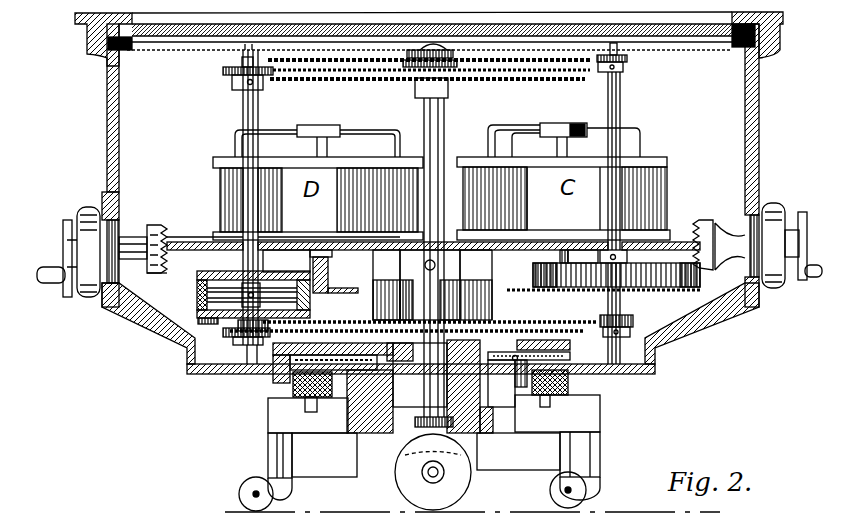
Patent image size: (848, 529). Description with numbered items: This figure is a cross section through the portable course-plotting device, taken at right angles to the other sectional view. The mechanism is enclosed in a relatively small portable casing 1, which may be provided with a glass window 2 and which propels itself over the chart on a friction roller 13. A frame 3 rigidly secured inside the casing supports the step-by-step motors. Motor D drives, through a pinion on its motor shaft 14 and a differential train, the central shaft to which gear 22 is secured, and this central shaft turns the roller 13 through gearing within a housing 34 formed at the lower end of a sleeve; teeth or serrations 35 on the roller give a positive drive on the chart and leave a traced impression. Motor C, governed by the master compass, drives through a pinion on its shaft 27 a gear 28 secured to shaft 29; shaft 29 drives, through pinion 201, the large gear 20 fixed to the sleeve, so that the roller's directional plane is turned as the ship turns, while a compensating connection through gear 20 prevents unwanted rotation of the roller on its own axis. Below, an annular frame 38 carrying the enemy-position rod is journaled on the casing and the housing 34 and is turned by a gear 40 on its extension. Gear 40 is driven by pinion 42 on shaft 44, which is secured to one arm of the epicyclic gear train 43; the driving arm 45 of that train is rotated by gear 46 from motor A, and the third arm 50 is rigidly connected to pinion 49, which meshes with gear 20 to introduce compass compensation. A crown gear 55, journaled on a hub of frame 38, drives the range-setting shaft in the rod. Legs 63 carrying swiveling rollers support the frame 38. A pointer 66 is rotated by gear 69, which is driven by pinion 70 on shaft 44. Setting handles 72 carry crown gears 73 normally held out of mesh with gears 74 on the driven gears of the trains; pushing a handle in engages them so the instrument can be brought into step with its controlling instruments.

The casing 1 is at (108, 122).
The glass window 2 is at (431, 25).
The frame 3 is at (207, 241).
The friction roller 13 is at (441, 287).
The motor shaft 14 is at (322, 262).
The large gear 20 is at (532, 320).
The gear 22 is at (429, 81).
The shaft 27 is at (562, 259).
The gear 28 is at (530, 278).
The shaft 29 is at (623, 302).
The pinion 201 is at (630, 324).
The housing 34 is at (395, 440).
The teeth or serrations 35 is at (396, 490).
The annular frame 38 is at (512, 418).
The gear 40 is at (575, 360).
The pinion 42 is at (232, 340).
The epicyclic gear train 43 is at (197, 298).
The shaft 44 is at (245, 110).
The driving arm 45 is at (276, 270).
The gear 46 is at (357, 285).
The pinion 49 is at (232, 328).
The third arm 50 is at (206, 323).
The crown gear 55 is at (337, 391).
The legs 63 is at (270, 448).
The pointer 66 is at (386, 46).
The gear 69 is at (578, 75).
The pinion 70 is at (230, 71).
The setting handle 72 is at (70, 222).
The crown gear 73 is at (160, 228).
The gear 74 is at (170, 281).